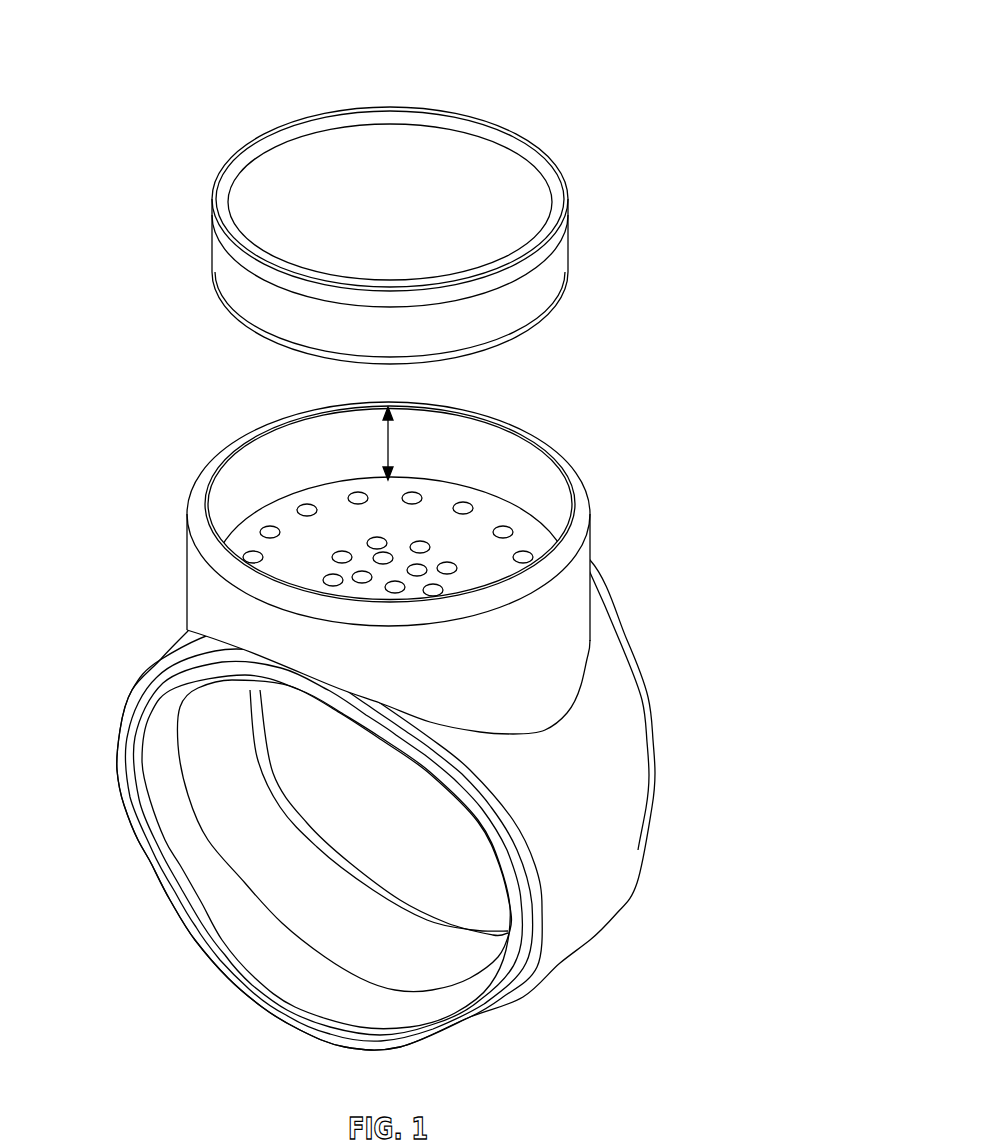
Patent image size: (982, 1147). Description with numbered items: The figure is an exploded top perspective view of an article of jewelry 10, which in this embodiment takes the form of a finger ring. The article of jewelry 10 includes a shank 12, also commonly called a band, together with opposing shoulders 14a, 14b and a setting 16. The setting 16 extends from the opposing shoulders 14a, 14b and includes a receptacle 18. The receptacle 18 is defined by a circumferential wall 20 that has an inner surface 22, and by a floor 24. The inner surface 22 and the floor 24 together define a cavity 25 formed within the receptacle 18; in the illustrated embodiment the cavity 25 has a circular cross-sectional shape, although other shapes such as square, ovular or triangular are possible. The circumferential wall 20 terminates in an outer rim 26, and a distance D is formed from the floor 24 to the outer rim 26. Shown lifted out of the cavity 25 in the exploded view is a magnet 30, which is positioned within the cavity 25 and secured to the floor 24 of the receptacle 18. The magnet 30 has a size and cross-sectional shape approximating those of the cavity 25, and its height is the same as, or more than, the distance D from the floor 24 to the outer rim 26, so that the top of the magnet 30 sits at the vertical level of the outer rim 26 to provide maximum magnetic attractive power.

The article of jewelry 10 is at (657, 48).
The shank 12 is at (560, 942).
The shoulder 14a is at (623, 742).
The shoulder 14b is at (137, 677).
The setting 16 is at (591, 558).
The receptacle 18 is at (206, 475).
The circumferential wall 20 is at (187, 557).
The inner surface 22 is at (470, 443).
The floor 24 is at (463, 503).
The cavity 25 is at (485, 527).
The outer rim 26 is at (287, 422).
The magnet 30 is at (527, 187).
The distance D is at (387, 438).